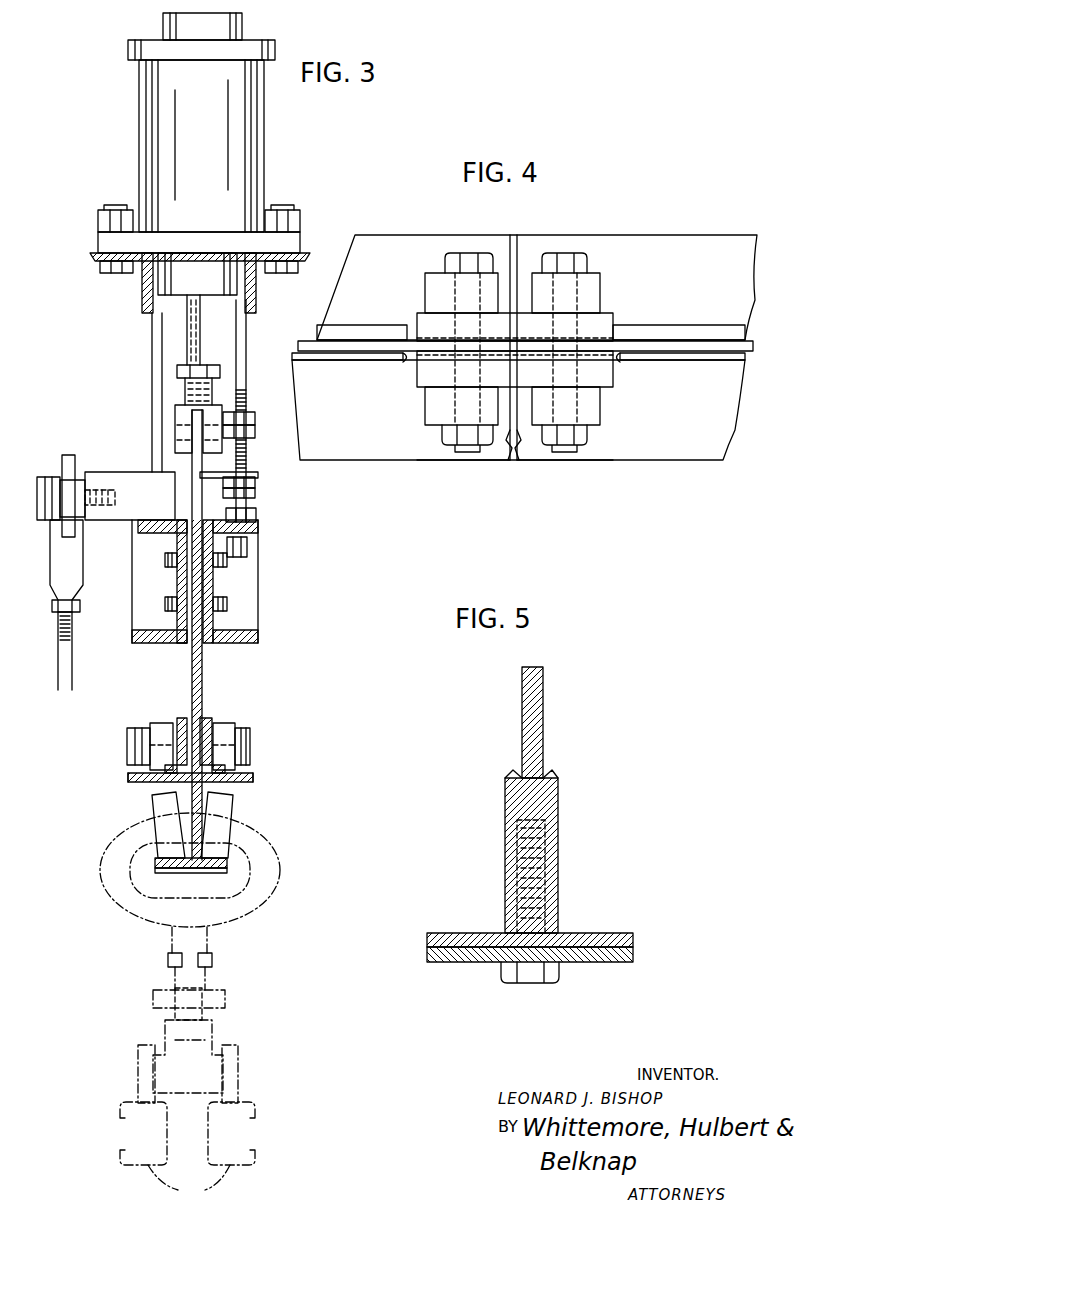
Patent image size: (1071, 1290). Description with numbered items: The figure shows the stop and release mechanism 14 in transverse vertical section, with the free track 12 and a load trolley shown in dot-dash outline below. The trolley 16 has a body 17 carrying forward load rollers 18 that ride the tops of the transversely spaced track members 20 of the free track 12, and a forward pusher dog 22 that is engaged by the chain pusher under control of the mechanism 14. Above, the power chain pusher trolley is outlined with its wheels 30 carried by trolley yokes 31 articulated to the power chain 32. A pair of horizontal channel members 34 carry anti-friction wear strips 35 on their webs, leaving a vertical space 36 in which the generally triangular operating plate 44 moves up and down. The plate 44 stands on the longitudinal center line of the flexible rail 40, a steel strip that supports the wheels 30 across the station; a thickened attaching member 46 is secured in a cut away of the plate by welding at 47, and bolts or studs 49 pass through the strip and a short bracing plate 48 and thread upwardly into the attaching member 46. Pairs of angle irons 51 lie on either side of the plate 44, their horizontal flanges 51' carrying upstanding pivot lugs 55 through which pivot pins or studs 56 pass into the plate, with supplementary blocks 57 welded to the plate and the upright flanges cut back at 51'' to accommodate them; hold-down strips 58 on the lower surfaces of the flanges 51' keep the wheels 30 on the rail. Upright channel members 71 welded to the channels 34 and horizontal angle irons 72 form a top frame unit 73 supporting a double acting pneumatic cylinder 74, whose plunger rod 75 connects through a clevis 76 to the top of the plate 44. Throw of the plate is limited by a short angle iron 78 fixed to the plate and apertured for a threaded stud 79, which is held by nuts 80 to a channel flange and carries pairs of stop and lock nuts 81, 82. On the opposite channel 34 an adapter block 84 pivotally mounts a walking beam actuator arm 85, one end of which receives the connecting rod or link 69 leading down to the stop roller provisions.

In FIG. 3, the free track 12 is at (267, 1156).
In FIG. 3, the stop and release mechanism 14 is at (279, 590).
In FIG. 3, the trolley 16 is at (223, 1039).
In FIG. 3, the trolley body 17 is at (185, 1045).
In FIG. 3, the forward load rollers 18 is at (238, 1075).
In FIG. 3, the track members 20 is at (189, 1182).
In FIG. 3, the pusher dog 22 is at (225, 998).
In FIG. 3, the wheels 30 is at (152, 806).
In FIG. 3, the trolley yokes 31 is at (265, 893).
In FIG. 3, the power chain 32 is at (212, 960).
In FIG. 3, the channel members 34 is at (152, 643).
In FIG. 3, the anti-friction wear strips 35 is at (186, 643).
In FIG. 3, the vertical space 36 is at (205, 625).
In FIG. 3, the flexible rail 40 is at (155, 865).
In FIG. 4, the flexible rail 40 is at (430, 460).
In FIG. 5, the flexible rail 40 is at (462, 942).
In FIG. 3, the operating plate 44 is at (202, 694).
In FIG. 4, the operating plate 44 is at (368, 348).
In FIG. 5, the operating plate 44 is at (534, 748).
In FIG. 5, the attaching member 46 is at (556, 830).
In FIG. 5, the welding 47 is at (545, 776).
In FIG. 5, the bracing plate 48 is at (478, 954).
In FIG. 5, the bolts or studs 49 is at (531, 975).
In FIG. 3, the angle irons 51 is at (172, 736).
In FIG. 4, the angle irons 51 is at (537, 351).
In FIG. 3, the horizontal flanges 51' is at (185, 761).
In FIG. 4, the horizontal flanges 51' is at (522, 352).
In FIG. 4, the cut back portions 51'' is at (518, 353).
In FIG. 3, the pivot lugs 55 is at (232, 735).
In FIG. 4, the pivot lugs 55 is at (435, 280).
In FIG. 4, the pivot pins or studs 56 is at (470, 262).
In FIG. 4, the supplementary blocks 57 is at (613, 316).
In FIG. 3, the hold-down strips 58 is at (150, 780).
In FIG. 4, the hold-down strips 58 is at (513, 456).
In FIG. 3, the connecting rod or link 69 is at (58, 672).
In FIG. 3, the upright channel members 71 is at (246, 362).
In FIG. 3, the horizontal angle irons 72 is at (145, 290).
In FIG. 3, the top frame unit 73 is at (152, 383).
In FIG. 3, the pneumatic cylinder 74 is at (250, 172).
In FIG. 3, the plunger rod 75 is at (200, 347).
In FIG. 3, the clevis 76 is at (180, 415).
In FIG. 3, the angle iron 78 is at (250, 472).
In FIG. 3, the threaded stud 79 is at (246, 396).
In FIG. 3, the nuts 80 is at (256, 516).
In FIG. 3, the limiting stop nuts 81 is at (255, 431).
In FIG. 3, the lock nuts 82 is at (255, 418).
In FIG. 3, the adapter block 84 is at (125, 500).
In FIG. 3, the actuator arm 85 is at (68, 472).